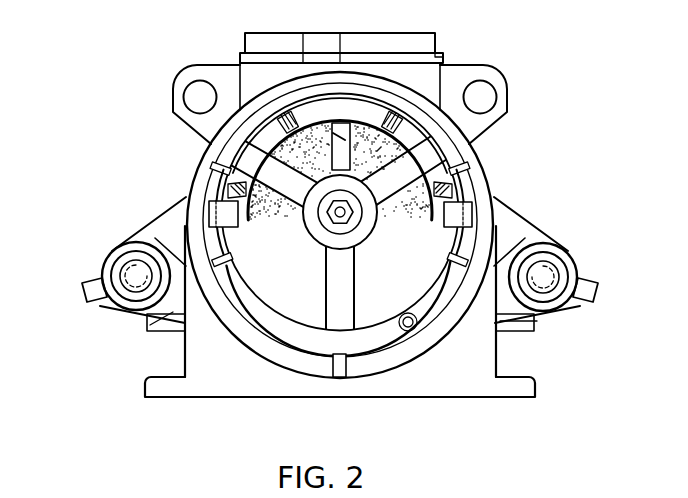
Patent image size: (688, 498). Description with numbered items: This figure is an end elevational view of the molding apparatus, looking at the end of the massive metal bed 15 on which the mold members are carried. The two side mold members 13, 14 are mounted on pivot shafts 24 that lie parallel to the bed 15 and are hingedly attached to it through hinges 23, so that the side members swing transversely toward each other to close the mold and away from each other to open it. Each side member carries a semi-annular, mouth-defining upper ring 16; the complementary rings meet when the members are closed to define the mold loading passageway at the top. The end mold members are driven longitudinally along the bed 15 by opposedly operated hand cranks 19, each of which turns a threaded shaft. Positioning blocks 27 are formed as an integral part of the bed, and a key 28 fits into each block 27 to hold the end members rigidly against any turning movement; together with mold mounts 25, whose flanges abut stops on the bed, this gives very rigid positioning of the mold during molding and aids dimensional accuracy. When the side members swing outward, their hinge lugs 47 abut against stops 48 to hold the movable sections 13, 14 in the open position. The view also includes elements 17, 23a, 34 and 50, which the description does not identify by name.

The side mold member 13 is at (303, 32).
The side mold member 14 is at (405, 57).
The bed 15 is at (477, 369).
The upper ring 16 is at (375, 44).
The flange 17 is at (425, 61).
The hand crank 19 is at (412, 108).
The hinge 23 is at (163, 230).
The bracket foot 23a is at (163, 327).
The pivot shaft 24 is at (136, 276).
The mold mount 25 is at (477, 193).
The positioning block 27 is at (197, 183).
The key 28 is at (217, 210).
The mounting lug 34 is at (182, 92).
The hinge lug 47 is at (92, 294).
The stop 48 is at (333, 133).
The key 50 is at (340, 368).